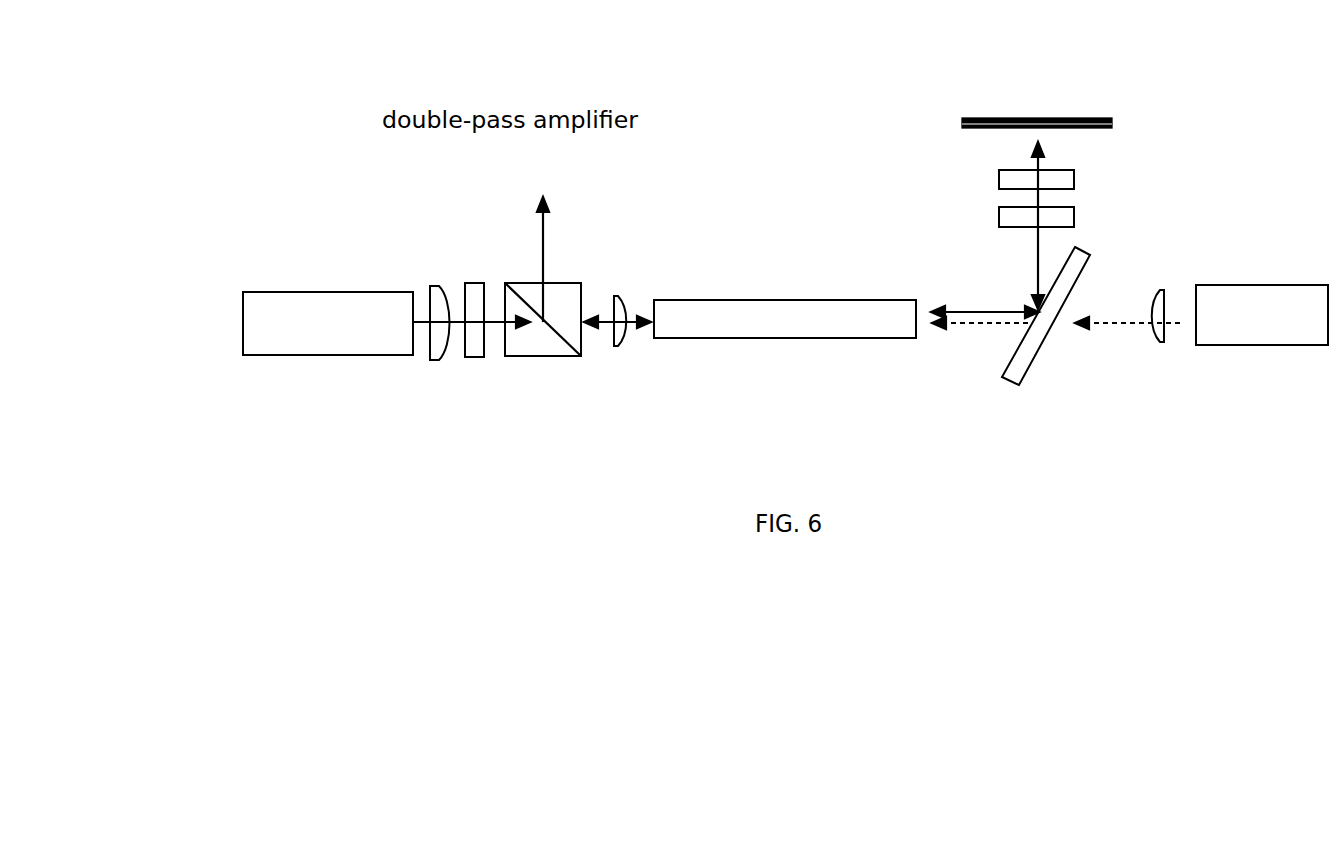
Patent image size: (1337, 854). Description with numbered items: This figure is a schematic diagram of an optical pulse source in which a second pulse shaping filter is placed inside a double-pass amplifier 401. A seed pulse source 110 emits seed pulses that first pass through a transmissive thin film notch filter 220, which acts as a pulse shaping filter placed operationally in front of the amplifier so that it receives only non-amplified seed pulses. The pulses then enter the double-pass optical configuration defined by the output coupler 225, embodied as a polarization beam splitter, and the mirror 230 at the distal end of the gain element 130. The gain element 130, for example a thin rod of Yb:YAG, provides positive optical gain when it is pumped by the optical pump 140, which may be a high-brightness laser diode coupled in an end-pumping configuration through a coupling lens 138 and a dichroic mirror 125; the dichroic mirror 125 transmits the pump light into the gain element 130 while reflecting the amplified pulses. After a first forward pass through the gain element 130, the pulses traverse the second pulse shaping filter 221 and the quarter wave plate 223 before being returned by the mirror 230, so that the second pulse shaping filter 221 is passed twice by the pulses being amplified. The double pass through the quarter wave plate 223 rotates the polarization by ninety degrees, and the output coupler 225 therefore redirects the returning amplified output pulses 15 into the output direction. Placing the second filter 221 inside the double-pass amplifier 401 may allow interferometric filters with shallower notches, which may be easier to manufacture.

The seed pulse source 110 is at (319, 292).
The transmissive thin film notch filter 220 is at (466, 283).
The output coupler 225 is at (521, 358).
The amplified output pulses 15 is at (544, 250).
The gain element 130 is at (760, 300).
The double-pass amplifier 401 is at (824, 165).
The quarter wave plate 223 is at (997, 180).
The second pulse shaping filter 221 is at (997, 218).
The mirror 230 is at (1028, 116).
The dichroic mirror 125 is at (1018, 388).
The coupling lens 138 is at (1160, 345).
The optical pump 140 is at (1303, 345).